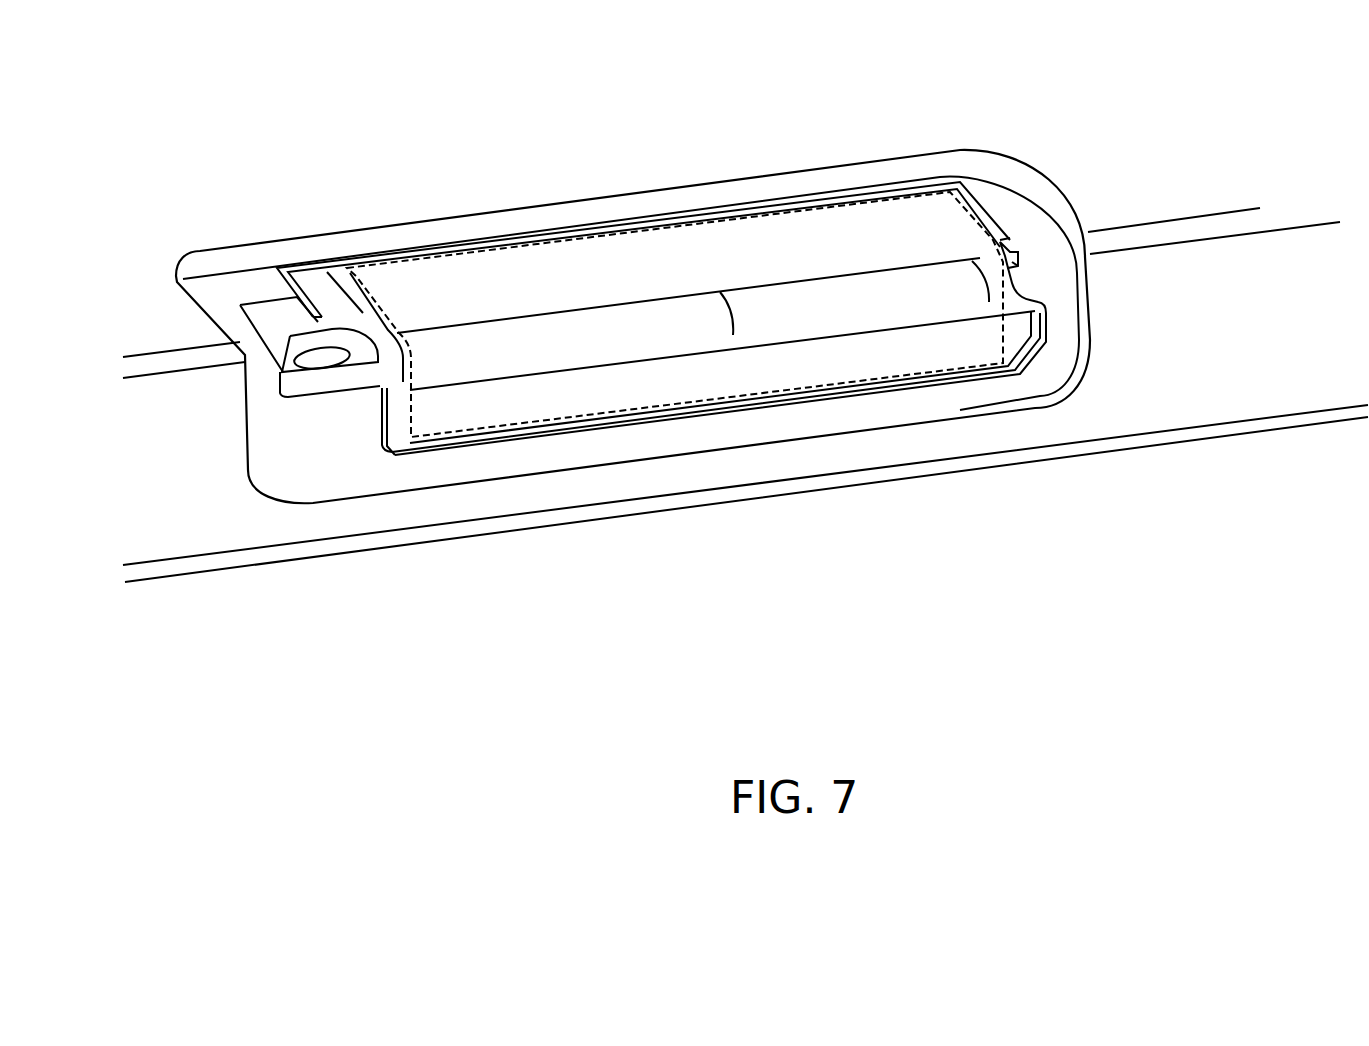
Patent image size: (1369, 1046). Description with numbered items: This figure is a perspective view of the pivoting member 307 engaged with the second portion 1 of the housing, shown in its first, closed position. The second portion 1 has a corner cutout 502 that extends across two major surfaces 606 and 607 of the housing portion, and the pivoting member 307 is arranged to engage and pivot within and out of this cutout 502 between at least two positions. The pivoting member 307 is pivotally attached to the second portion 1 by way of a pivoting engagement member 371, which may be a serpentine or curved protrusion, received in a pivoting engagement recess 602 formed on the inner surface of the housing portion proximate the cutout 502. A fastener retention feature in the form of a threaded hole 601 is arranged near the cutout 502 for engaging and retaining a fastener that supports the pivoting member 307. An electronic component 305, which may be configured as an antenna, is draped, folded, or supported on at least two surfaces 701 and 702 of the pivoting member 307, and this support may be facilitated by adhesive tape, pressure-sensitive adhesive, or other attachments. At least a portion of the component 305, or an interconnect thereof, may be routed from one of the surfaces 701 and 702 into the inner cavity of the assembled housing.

The second portion 1 is at (745, 349).
The cutout 502 is at (510, 188).
The pivoting engagement member 371 is at (1000, 238).
The pivoting engagement recess 602 is at (1017, 262).
The major surface 606 is at (1191, 206).
The major surface 607 is at (1168, 306).
The threaded hole 601 is at (314, 352).
The electronic component 305 is at (412, 357).
The pivoting member 307 is at (581, 356).
The surface 701 is at (897, 251).
The surface 702 is at (948, 361).